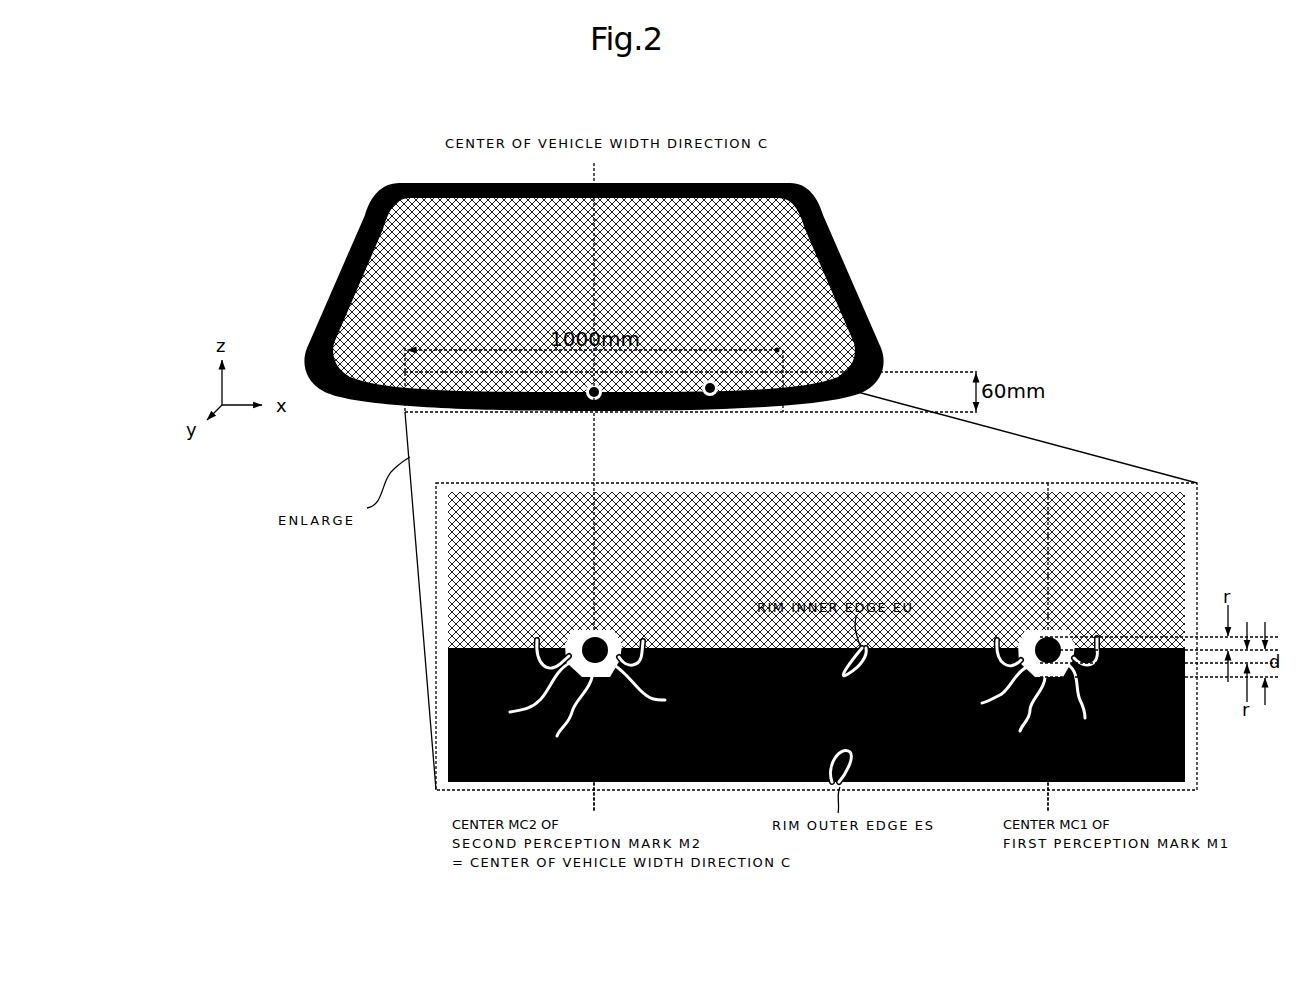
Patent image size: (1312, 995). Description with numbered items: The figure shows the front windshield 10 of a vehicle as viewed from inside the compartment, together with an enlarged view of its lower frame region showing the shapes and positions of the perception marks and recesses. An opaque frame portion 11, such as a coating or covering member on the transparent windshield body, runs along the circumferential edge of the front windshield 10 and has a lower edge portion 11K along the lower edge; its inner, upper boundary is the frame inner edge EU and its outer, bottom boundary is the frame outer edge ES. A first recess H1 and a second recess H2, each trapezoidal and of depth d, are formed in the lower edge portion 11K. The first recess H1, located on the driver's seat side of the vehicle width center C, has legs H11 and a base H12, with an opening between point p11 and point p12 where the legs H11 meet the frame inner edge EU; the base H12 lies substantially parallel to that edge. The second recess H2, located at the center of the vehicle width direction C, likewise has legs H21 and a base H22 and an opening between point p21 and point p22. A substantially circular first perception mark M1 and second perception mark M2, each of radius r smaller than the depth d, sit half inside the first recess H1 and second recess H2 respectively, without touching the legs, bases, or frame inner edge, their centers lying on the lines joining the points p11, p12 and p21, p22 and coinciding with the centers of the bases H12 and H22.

The front windshield 10 is at (441, 162).
The frame portion 11 is at (358, 257).
The lower edge portion 11K is at (393, 391).
The first perception mark M1 is at (1035, 638).
The second perception mark M2 is at (602, 629).
The first recess H1 is at (1065, 650).
The second recess H2 is at (617, 649).
The legs H11 is at (1033, 701).
The base H12 is at (1017, 715).
The legs H21 is at (588, 693).
The base H22 is at (560, 718).
The point p11 is at (1097, 640).
The point p12 is at (998, 640).
The point p21 is at (630, 656).
The point p22 is at (540, 640).